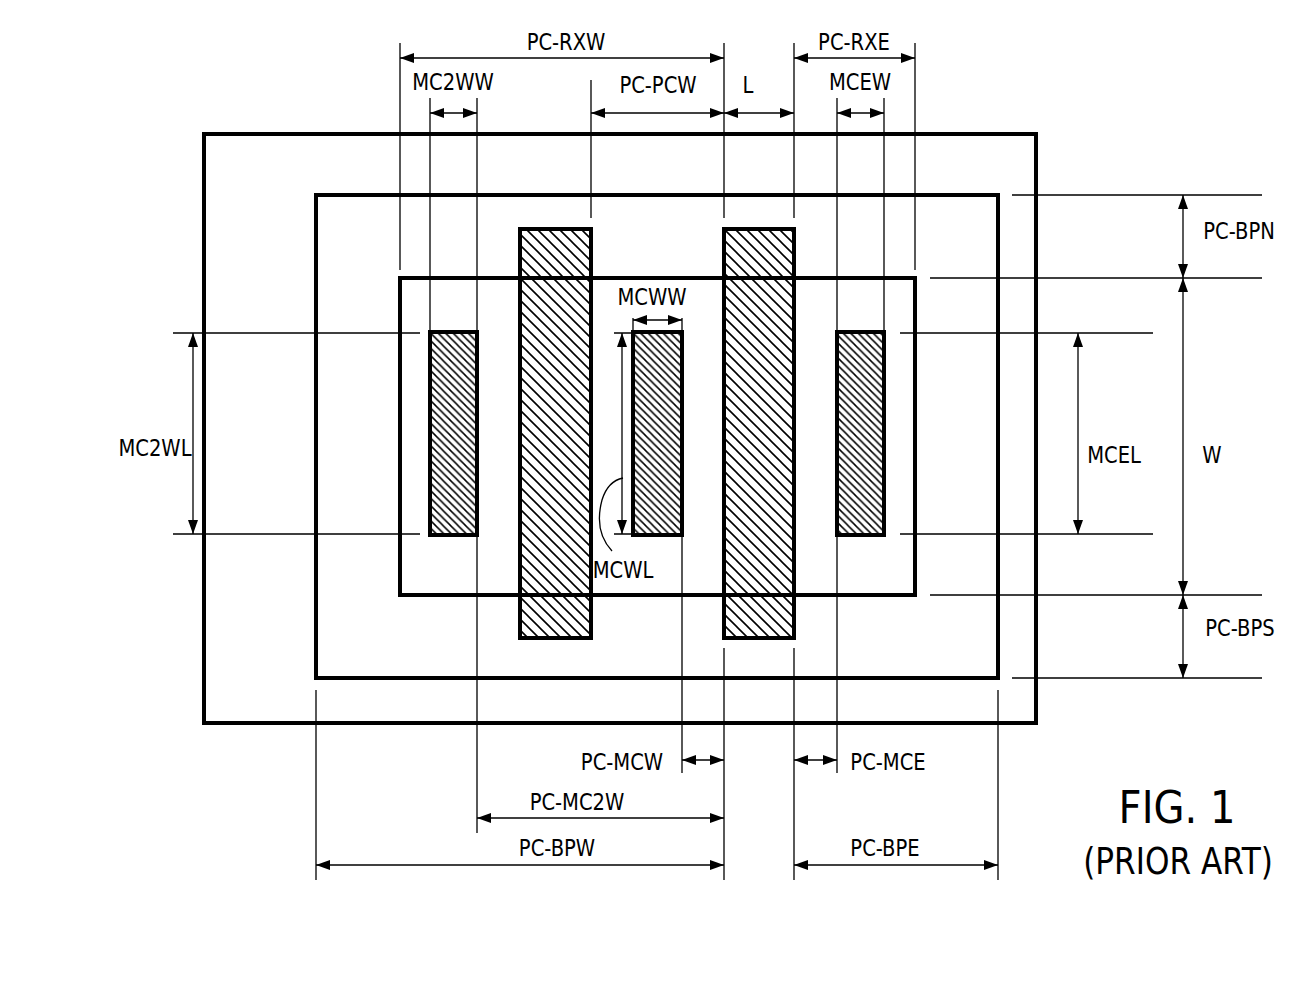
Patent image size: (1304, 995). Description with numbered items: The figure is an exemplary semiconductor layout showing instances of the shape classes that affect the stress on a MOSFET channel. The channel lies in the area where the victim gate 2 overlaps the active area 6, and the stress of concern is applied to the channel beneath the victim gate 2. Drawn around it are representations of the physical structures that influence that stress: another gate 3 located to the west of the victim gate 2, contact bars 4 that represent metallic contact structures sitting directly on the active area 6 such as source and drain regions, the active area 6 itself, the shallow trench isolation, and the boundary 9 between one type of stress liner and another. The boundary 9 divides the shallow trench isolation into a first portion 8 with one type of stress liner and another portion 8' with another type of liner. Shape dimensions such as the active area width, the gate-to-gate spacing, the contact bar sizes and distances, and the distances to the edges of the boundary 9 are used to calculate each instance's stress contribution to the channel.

The victim gate 2 is at (741, 438).
The gate 3 is at (537, 438).
The contact bars 4 is at (454, 438).
The active area 6 is at (492, 438).
The first portion of shallow trench isolation 8 is at (657, 436).
The another portion of shallow trench isolation 8' is at (620, 428).
The boundary between stress liners 9 is at (315, 578).